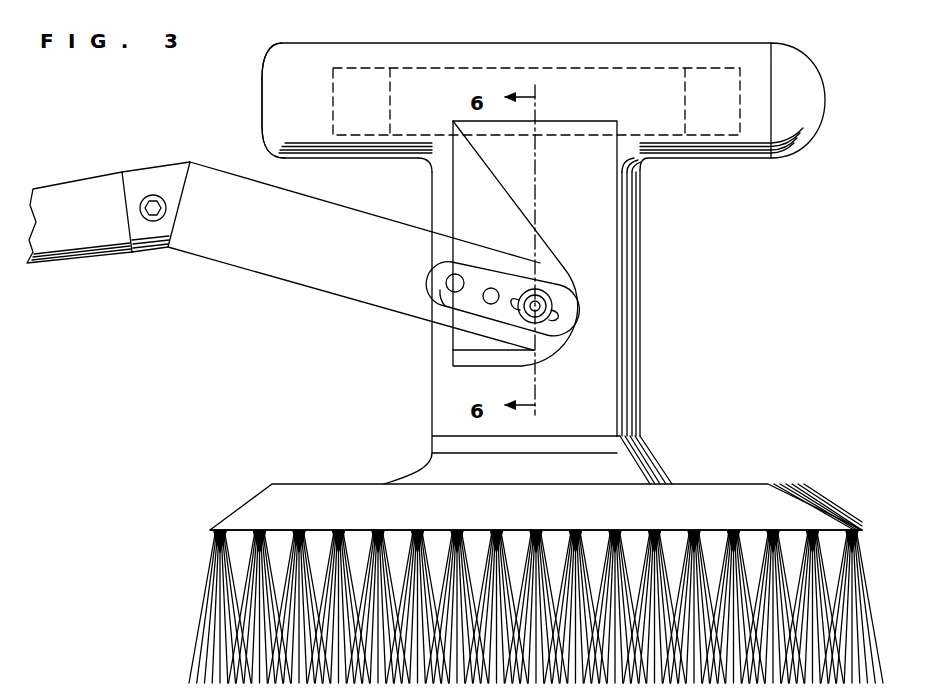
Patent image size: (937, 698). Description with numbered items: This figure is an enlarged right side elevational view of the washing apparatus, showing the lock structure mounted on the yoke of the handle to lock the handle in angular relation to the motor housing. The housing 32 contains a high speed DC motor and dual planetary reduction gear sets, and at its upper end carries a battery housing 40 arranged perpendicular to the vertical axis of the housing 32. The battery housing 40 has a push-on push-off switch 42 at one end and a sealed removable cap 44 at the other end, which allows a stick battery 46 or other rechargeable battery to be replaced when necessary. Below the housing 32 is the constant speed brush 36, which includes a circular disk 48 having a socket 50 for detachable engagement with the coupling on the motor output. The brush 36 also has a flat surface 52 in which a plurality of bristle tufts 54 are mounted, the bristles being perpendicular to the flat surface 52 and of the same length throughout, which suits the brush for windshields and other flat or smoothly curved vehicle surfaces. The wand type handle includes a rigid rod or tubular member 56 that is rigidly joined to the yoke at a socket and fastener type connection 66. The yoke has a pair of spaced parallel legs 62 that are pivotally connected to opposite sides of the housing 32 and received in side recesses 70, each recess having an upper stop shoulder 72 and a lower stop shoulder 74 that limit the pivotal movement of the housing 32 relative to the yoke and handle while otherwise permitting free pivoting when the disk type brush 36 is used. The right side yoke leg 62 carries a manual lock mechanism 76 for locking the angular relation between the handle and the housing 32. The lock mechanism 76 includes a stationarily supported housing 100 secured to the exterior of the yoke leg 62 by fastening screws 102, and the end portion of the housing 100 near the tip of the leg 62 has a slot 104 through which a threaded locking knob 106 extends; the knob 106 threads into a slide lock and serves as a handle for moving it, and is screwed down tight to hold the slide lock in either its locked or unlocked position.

The housing 32 is at (646, 353).
The brush 36 is at (725, 475).
The battery housing 40 is at (565, 50).
The push-on push-off switch 42 is at (806, 100).
The sealed removable cap 44 is at (278, 78).
The stick battery 46 is at (452, 80).
The circular disk 48 is at (657, 502).
The socket 50 is at (603, 470).
The flat surface 52 is at (238, 540).
The bristle tufts 54 is at (222, 612).
The rigid rod or tubular member 56 is at (78, 198).
The legs 62 is at (213, 243).
The socket and fastener type connection 66 is at (155, 175).
The recesses 70 is at (507, 198).
The upper stop shoulder 72 is at (490, 160).
The lower stop shoulder 74 is at (465, 345).
The manual lock mechanism 76 is at (433, 306).
The housing 100 is at (477, 277).
The fastening screws 102 is at (455, 283).
The slot 104 is at (557, 312).
The threaded locking knob 106 is at (553, 297).